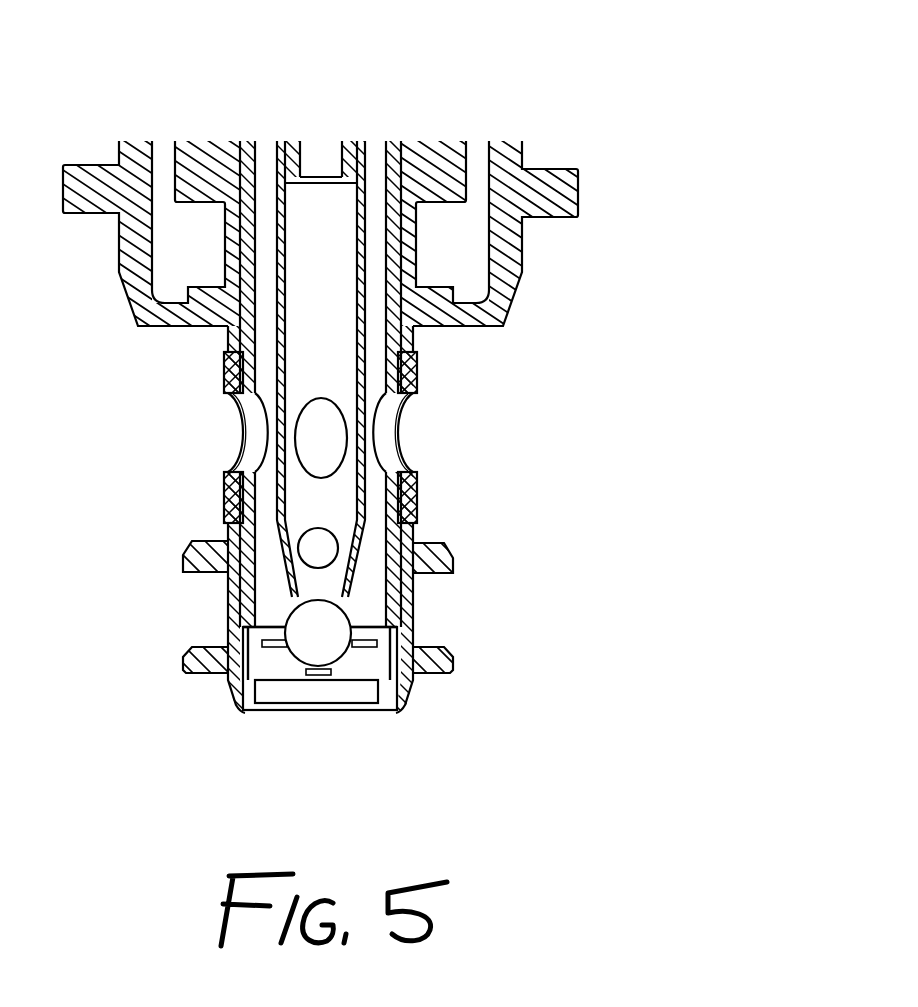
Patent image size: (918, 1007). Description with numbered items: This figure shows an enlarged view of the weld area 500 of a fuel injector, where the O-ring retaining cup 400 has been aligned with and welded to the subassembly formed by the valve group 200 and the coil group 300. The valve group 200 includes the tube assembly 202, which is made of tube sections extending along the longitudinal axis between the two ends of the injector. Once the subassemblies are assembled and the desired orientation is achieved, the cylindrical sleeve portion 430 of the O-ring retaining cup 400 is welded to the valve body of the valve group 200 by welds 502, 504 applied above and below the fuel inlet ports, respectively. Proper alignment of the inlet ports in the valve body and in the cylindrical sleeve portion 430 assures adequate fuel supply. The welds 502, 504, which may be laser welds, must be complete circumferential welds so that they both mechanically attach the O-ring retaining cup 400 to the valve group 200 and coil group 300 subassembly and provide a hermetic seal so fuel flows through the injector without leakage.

The fluid dispensing assembly 500 is at (847, 97).
The valve group 200 is at (350, 137).
The coil group 300 is at (448, 138).
The O-ring retaining cup 400 is at (513, 258).
The cylindrical sleeve portion 430 is at (403, 487).
The weld 502 is at (423, 368).
The weld 504 is at (420, 503).
The tube assembly 202 is at (388, 597).